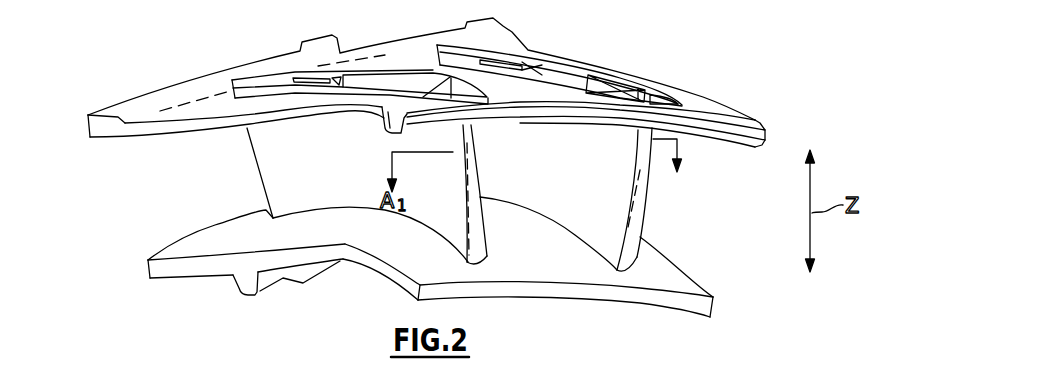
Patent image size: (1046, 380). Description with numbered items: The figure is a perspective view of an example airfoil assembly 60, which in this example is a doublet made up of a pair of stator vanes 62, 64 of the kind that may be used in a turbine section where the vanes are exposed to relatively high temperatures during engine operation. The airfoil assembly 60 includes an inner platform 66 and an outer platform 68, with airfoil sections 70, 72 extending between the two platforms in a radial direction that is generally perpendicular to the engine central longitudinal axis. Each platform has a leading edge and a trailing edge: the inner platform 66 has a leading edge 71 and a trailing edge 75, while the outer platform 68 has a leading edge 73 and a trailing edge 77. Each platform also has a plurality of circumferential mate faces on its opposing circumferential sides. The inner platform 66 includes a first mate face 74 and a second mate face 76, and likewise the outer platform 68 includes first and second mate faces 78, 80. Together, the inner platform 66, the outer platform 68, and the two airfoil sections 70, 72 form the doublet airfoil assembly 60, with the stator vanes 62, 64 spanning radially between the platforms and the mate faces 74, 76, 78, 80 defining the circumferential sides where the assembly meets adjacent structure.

The airfoil assembly 60 is at (645, 43).
The stator vane 62 is at (189, 158).
The stator vane 64 is at (703, 168).
The inner platform 66 is at (388, 283).
The outer platform 68 is at (181, 81).
The airfoil section 70 is at (272, 164).
The leading edge 71 is at (586, 290).
The airfoil section 72 is at (645, 231).
The leading edge 73 is at (542, 116).
The first mate face 74 is at (313, 252).
The trailing edge 75 is at (178, 241).
The second mate face 76 is at (692, 271).
The trailing edge 77 is at (88, 118).
The first mate face 78 is at (306, 110).
The second mate face 80 is at (709, 91).